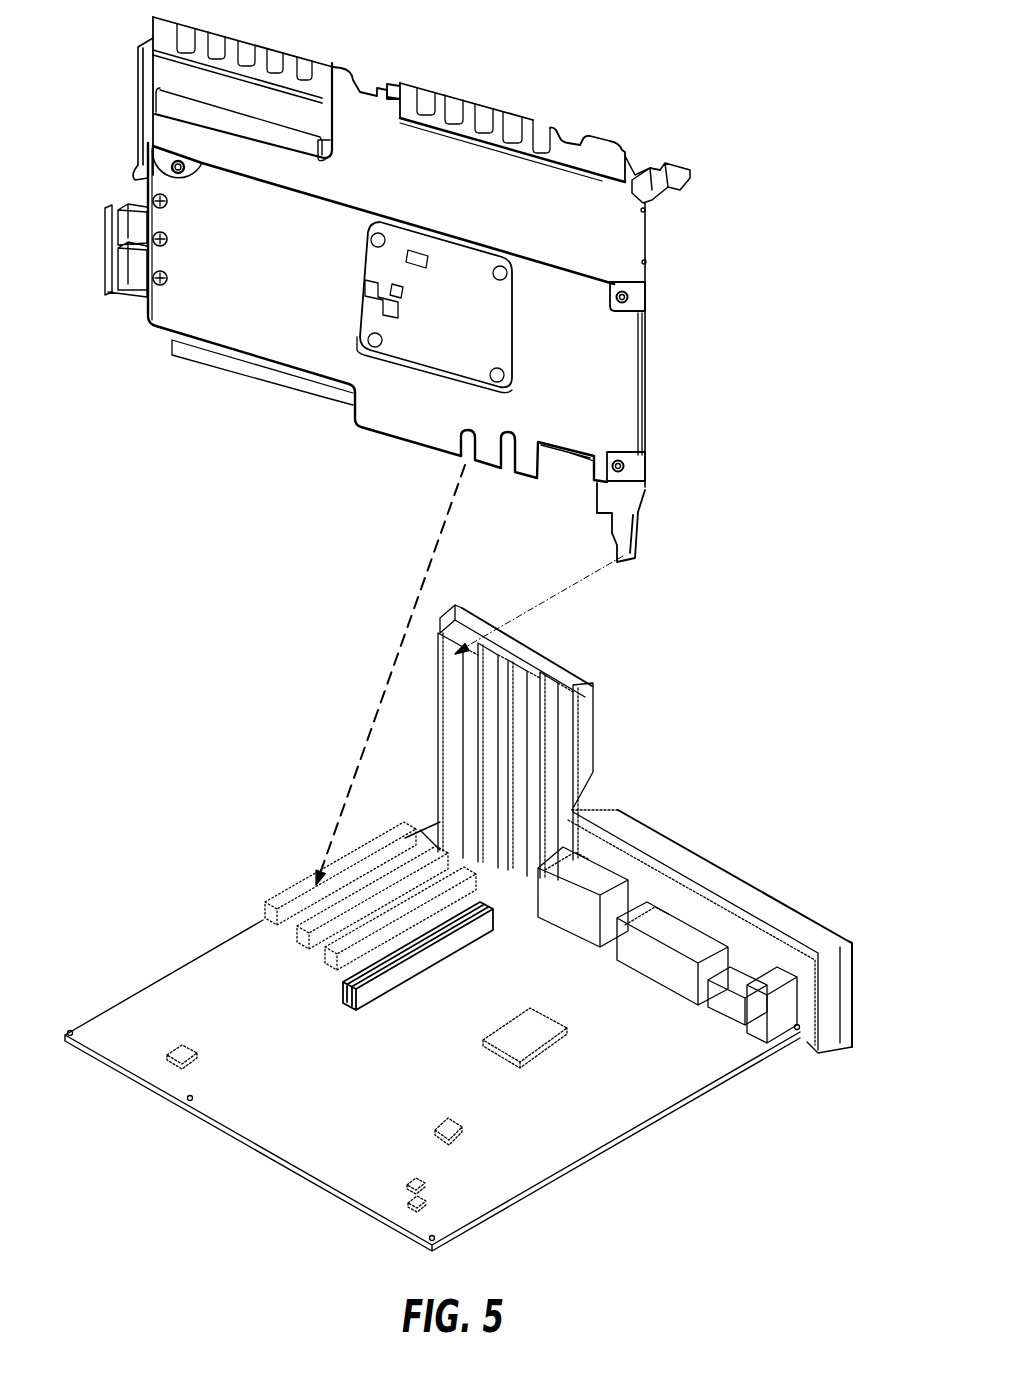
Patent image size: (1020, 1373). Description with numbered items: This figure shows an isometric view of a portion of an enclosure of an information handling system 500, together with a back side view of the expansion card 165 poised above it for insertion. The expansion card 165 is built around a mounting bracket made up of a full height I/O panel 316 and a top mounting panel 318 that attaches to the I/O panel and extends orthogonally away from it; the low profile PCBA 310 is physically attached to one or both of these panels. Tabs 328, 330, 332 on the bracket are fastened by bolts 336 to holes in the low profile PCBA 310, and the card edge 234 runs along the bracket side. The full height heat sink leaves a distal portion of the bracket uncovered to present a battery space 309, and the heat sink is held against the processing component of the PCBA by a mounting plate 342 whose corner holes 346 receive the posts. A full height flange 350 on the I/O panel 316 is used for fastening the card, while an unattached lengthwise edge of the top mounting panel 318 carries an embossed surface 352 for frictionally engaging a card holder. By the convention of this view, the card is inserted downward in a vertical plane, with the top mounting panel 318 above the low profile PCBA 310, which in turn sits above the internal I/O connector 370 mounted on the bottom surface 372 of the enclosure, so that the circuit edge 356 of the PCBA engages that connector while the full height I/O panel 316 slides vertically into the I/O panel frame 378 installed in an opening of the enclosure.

The expansion card 165 is at (607, 148).
The card edge 234 is at (646, 262).
The battery space 309 is at (232, 125).
The low profile PCBA 310 is at (247, 333).
The full height I/O panel 316 is at (628, 510).
The top mounting panel 318 is at (445, 163).
The tab 328 is at (642, 305).
The tab 330 is at (650, 472).
The tab 332 is at (143, 172).
The bolts 336 is at (176, 162).
The mounting plate 342 is at (418, 345).
The corner holes 346 is at (492, 380).
The full height flange 350 is at (683, 170).
The embossed surface 352 is at (438, 103).
The circuit edge 356 is at (427, 433).
The internal I/O connector 370 is at (496, 909).
The bottom surface 372 is at (257, 1032).
The I/O panel frame 378 is at (563, 665).
The computer system 500 is at (456, 928).